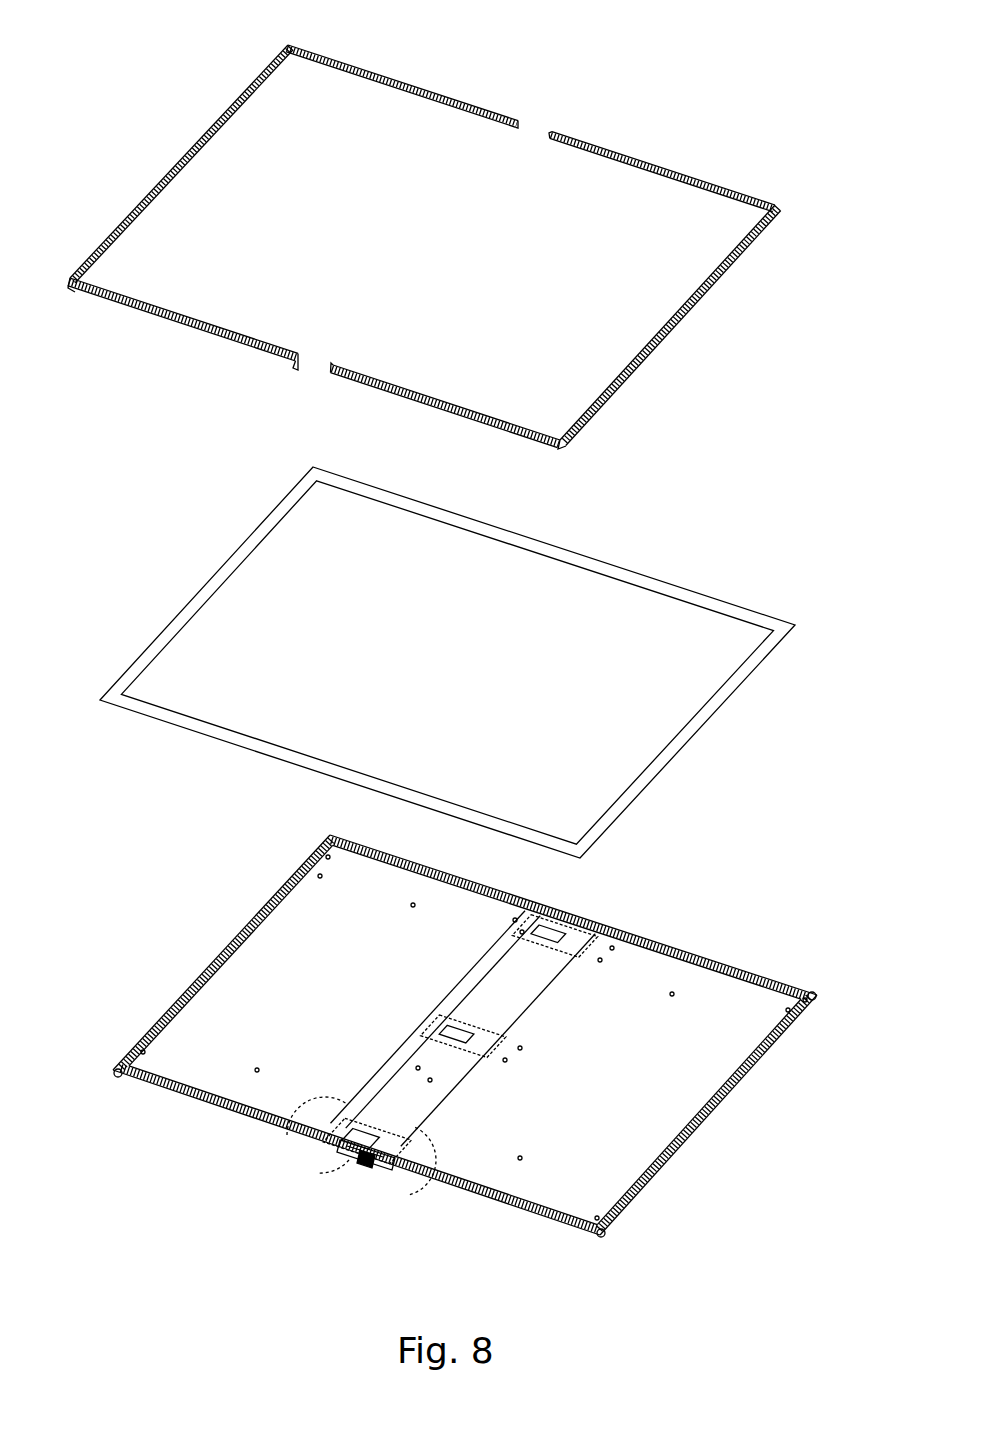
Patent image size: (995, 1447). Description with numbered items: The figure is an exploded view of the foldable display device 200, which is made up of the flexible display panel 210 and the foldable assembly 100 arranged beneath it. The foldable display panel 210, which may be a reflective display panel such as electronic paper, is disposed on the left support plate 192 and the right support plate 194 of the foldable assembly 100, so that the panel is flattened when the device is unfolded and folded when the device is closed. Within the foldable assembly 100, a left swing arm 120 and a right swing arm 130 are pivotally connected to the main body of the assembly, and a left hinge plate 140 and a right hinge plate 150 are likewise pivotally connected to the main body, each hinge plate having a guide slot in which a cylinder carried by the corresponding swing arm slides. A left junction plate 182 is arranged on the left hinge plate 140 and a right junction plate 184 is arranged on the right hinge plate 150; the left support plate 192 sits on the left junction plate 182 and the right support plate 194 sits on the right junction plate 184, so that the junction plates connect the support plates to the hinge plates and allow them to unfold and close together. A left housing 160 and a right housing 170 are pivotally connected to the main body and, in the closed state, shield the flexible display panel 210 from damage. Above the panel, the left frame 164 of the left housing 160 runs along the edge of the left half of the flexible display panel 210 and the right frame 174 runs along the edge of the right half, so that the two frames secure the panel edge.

The foldable display device 200 is at (55, 29).
The foldable assembly 100 is at (814, 954).
The left swing arm 120 is at (347, 1168).
The right swing arm 130 is at (373, 1178).
The left hinge plate 140 is at (330, 1157).
The right hinge plate 150 is at (387, 1183).
The left housing 160 is at (205, 1110).
The left frame 164 is at (203, 136).
The right housing 170 is at (483, 1200).
The right frame 174 is at (693, 296).
The left junction plate 182 is at (310, 1127).
The right junction plate 184 is at (433, 1137).
The left support plate 192 is at (223, 957).
The right support plate 194 is at (708, 1100).
The flexible display panel 210 is at (680, 718).